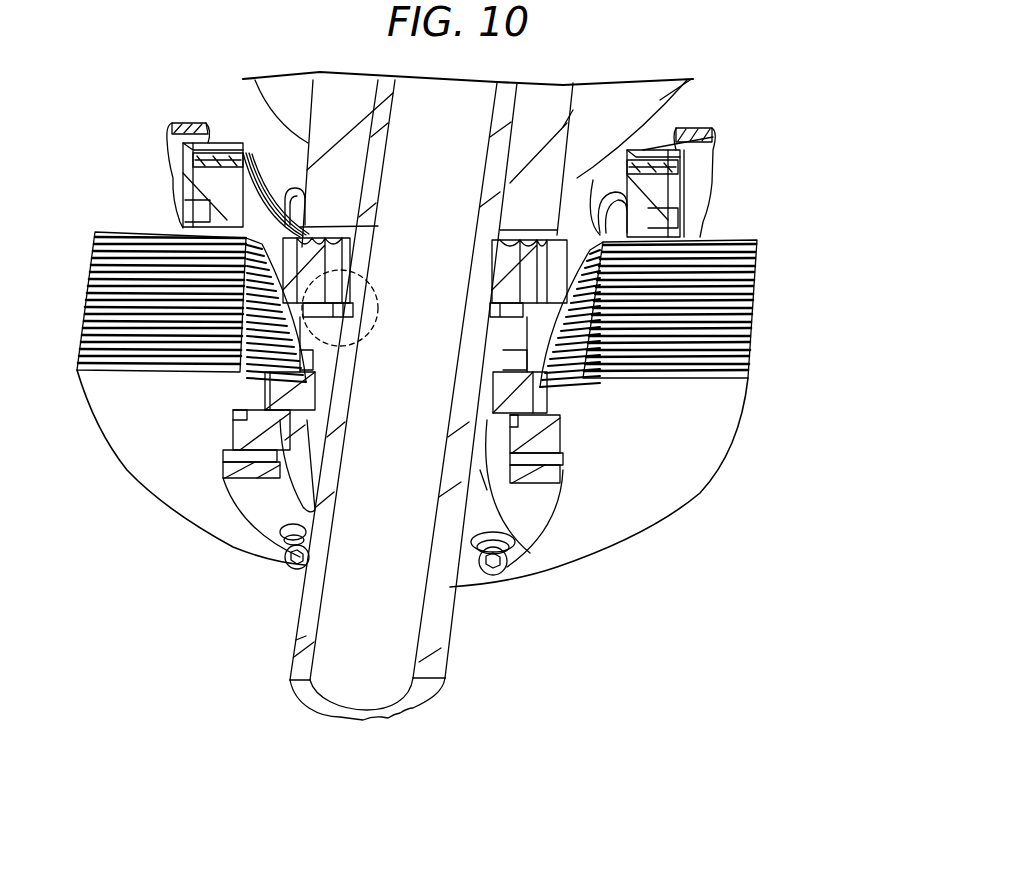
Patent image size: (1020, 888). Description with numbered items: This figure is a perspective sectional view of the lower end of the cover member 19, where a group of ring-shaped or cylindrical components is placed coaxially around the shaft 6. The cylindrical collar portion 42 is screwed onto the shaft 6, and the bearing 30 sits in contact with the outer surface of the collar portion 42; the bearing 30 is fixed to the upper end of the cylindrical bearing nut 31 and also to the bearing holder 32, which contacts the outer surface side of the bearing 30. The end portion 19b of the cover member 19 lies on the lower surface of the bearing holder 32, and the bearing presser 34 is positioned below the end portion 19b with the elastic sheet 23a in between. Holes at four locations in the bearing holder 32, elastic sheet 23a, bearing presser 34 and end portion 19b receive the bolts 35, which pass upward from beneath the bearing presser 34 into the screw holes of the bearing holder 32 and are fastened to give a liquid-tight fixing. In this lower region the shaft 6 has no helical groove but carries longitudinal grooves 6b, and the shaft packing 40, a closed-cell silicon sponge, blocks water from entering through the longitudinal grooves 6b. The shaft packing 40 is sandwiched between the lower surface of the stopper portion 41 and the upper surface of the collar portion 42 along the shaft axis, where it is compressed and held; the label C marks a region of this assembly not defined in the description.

The shaft 6 is at (390, 718).
The longitudinal grooves 6b is at (293, 627).
The cover member 19 is at (807, 322).
The end portion 19b is at (223, 453).
The elastic sheet 23a is at (228, 473).
The bearing 30 is at (233, 400).
The bearing nut 31 is at (233, 497).
The bearing holder 32 is at (250, 437).
The bearing presser 34 is at (225, 480).
The bolts 35 is at (337, 437).
The shaft packing 40 is at (500, 298).
The stopper portion 41 is at (500, 230).
The collar portion 42 is at (483, 420).
The clearance C is at (380, 317).